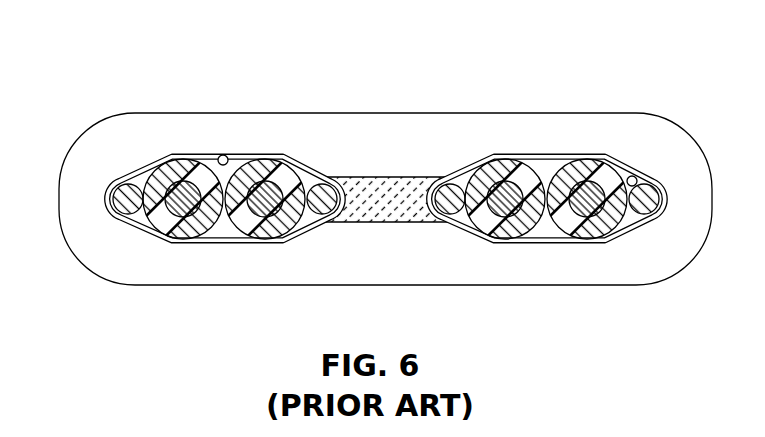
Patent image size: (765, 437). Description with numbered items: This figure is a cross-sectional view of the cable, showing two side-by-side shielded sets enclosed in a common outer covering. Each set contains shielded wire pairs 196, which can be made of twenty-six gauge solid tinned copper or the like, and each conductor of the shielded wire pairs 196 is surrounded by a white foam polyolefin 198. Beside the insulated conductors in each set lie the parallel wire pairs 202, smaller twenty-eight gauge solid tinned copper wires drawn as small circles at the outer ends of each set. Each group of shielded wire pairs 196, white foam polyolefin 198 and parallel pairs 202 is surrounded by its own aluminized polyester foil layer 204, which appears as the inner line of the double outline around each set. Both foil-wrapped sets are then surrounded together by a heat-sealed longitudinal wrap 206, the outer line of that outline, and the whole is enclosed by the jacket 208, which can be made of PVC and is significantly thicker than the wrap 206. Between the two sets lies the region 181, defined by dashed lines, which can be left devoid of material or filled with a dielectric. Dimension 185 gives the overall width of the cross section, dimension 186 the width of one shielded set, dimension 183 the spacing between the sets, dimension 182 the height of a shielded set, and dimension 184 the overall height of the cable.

The region 181 is at (400, 204).
The height of shielded pair 182 is at (50, 153).
The dimension 183 is at (225, 75).
The dimension 184 is at (722, 113).
The dimension 185 is at (59, 165).
The dimension 186 is at (107, 113).
The shielded wire pairs 196 is at (185, 215).
The white foam polyolefin 198 is at (167, 232).
The parallel wire pairs 202 is at (124, 210).
The aluminized polyester foil layer 204 is at (226, 157).
The heat-sealed longitudinal wrap 206 is at (152, 169).
The jacket 208 is at (96, 272).